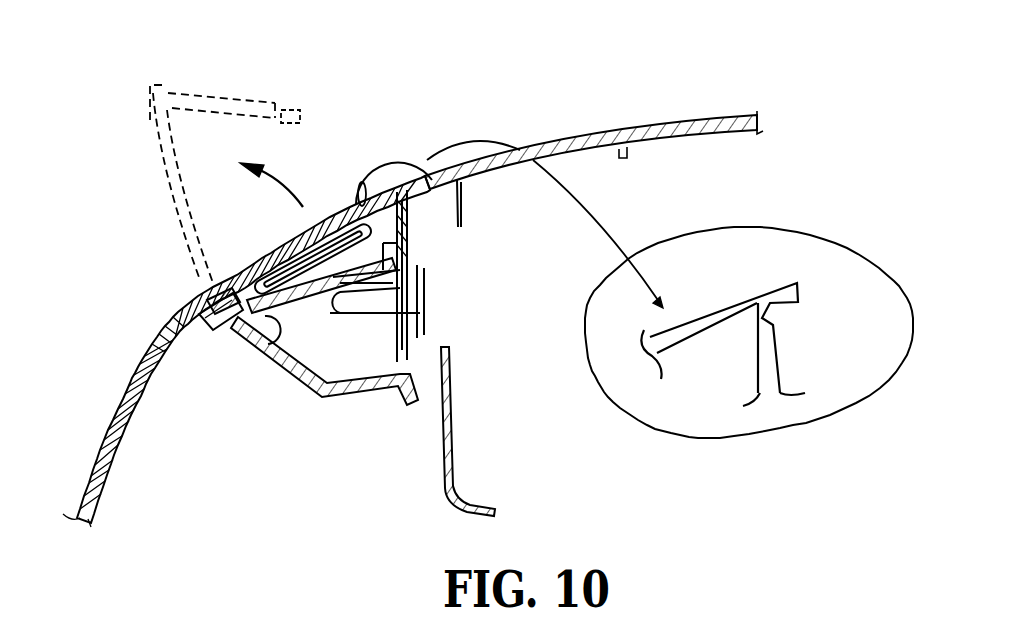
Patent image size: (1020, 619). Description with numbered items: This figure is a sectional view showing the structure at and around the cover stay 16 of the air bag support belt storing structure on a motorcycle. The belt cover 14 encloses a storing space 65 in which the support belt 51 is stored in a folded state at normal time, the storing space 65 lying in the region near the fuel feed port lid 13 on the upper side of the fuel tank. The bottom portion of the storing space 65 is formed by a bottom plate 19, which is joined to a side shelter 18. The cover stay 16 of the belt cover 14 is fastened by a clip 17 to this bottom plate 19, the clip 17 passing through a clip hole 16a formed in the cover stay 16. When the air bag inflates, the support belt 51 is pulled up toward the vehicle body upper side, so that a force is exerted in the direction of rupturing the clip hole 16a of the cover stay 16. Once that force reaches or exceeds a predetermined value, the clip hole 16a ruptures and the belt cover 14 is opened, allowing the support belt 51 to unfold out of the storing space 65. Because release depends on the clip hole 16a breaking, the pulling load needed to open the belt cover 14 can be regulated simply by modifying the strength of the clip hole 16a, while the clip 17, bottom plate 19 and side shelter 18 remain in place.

The fuel feed port lid 13 is at (562, 139).
The belt cover 14 is at (158, 140).
The cover stay 16 is at (218, 98).
The clip hole 16a is at (273, 105).
The clip 17 is at (355, 303).
The side shelter 18 is at (127, 386).
The bottom plate 19 is at (266, 345).
The support belt 51 is at (318, 238).
The storing space 65 is at (253, 267).